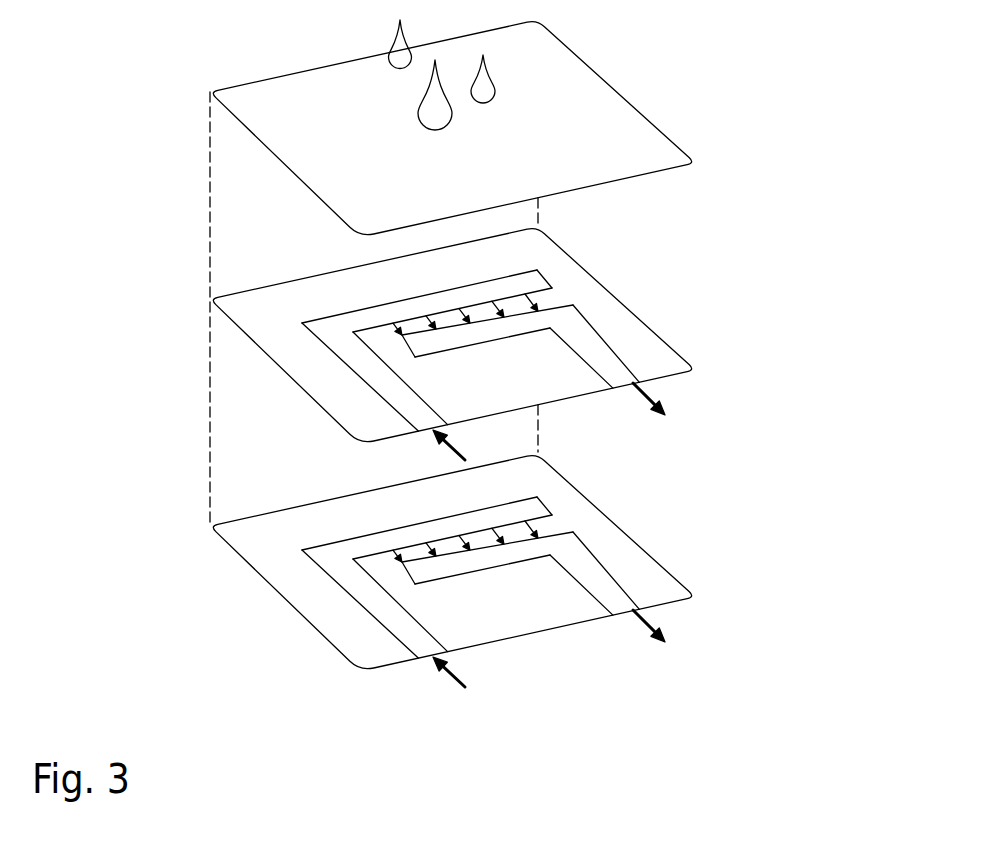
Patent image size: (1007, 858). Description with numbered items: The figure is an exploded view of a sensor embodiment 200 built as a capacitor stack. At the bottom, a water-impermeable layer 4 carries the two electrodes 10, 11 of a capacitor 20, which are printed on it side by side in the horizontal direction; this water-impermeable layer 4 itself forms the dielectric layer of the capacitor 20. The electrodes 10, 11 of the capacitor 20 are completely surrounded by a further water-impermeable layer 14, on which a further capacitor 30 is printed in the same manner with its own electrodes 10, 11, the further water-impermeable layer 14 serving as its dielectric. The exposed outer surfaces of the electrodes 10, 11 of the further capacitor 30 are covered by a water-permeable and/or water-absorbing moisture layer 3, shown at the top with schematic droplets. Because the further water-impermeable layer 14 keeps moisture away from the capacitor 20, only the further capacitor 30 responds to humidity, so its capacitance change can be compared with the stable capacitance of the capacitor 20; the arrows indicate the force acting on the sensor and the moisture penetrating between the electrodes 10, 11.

The sensor assembly 200 is at (533, 353).
The moisture layer 3 is at (620, 110).
The further water-impermeable layer 14 is at (652, 343).
The further capacitor 30 is at (403, 347).
The electrode 11 is at (535, 280).
The electrode 10 is at (602, 368).
The water-impermeable layer 4 is at (650, 570).
The capacitor 20 is at (417, 573).